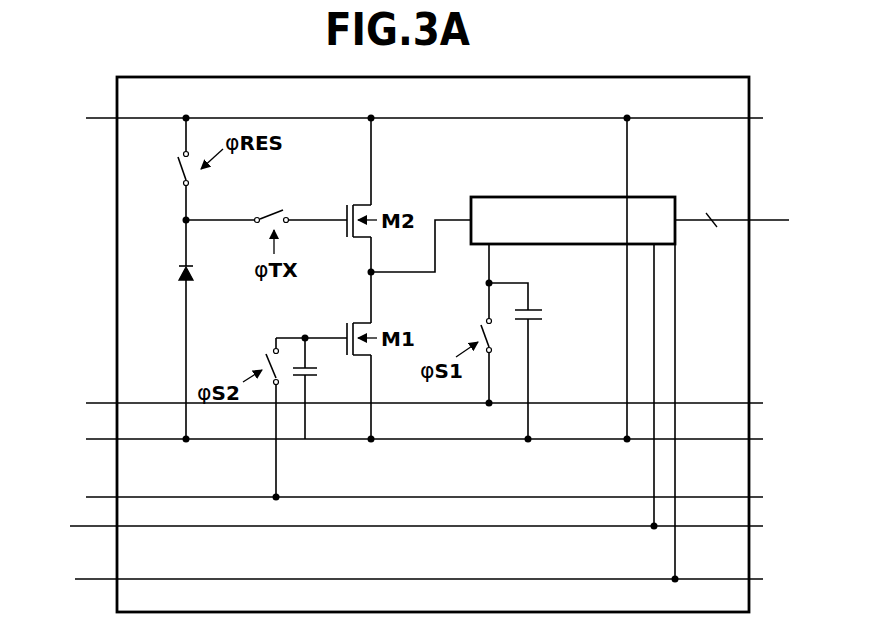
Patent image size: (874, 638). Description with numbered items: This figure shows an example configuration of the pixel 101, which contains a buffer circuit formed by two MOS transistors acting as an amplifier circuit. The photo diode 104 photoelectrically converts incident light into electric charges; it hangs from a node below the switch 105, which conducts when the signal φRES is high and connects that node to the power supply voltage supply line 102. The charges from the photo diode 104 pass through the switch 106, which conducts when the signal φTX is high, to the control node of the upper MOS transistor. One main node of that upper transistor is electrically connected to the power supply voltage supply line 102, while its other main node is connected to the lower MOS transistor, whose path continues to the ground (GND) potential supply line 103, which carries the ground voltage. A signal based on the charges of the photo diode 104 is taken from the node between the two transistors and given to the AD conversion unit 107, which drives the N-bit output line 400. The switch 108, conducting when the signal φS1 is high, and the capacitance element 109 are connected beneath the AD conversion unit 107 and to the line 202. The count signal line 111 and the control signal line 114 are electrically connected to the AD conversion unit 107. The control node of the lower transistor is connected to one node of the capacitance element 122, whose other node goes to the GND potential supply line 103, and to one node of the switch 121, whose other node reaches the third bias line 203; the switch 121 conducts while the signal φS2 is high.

The pixel 101 is at (189, 77).
The power supply voltage supply line 102 is at (101, 117).
The ground (GND) potential supply line 103 is at (103, 438).
The photo diode 104 is at (180, 271).
The switch 105 is at (180, 176).
The switch 106 is at (276, 214).
The AD conversion unit 107 is at (572, 197).
The switch 108 is at (476, 330).
The capacitance element 109 is at (545, 312).
The count signal line 111 is at (93, 526).
The control signal line 114 is at (90, 579).
The switch 121 is at (265, 363).
The capacitance element 122 is at (345, 378).
The signal line 202 is at (103, 402).
The third bias line 203 is at (103, 497).
The output line 400 is at (765, 220).